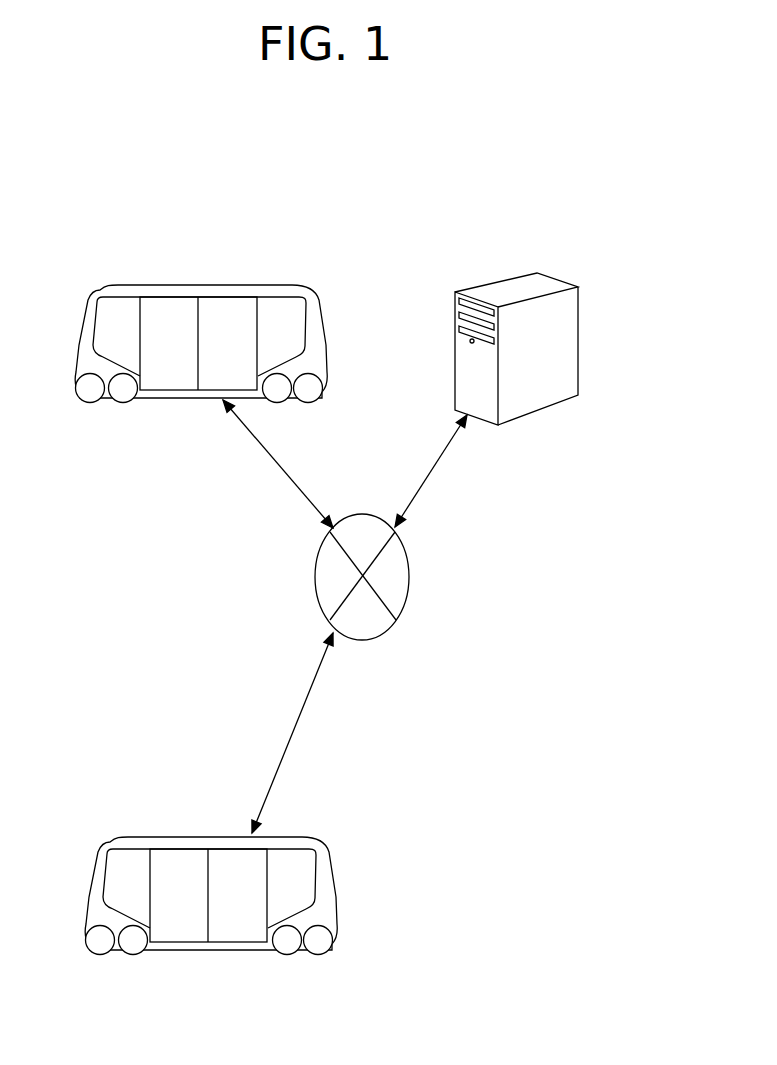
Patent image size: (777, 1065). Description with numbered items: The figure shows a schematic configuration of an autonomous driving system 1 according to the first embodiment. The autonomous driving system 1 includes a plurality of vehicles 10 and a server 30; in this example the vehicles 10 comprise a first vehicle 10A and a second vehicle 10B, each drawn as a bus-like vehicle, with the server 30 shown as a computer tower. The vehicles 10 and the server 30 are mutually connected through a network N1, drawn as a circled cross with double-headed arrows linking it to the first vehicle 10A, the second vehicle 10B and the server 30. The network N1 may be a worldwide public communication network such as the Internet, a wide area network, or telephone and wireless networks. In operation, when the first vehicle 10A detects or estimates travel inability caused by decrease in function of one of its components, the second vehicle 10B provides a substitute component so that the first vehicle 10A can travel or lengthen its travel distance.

The autonomous driving system 1 is at (247, 222).
The vehicles 10 is at (201, 571).
The first vehicle 10A is at (96, 287).
The second vehicle 10B is at (106, 838).
The server 30 is at (465, 352).
The network N1 is at (410, 577).